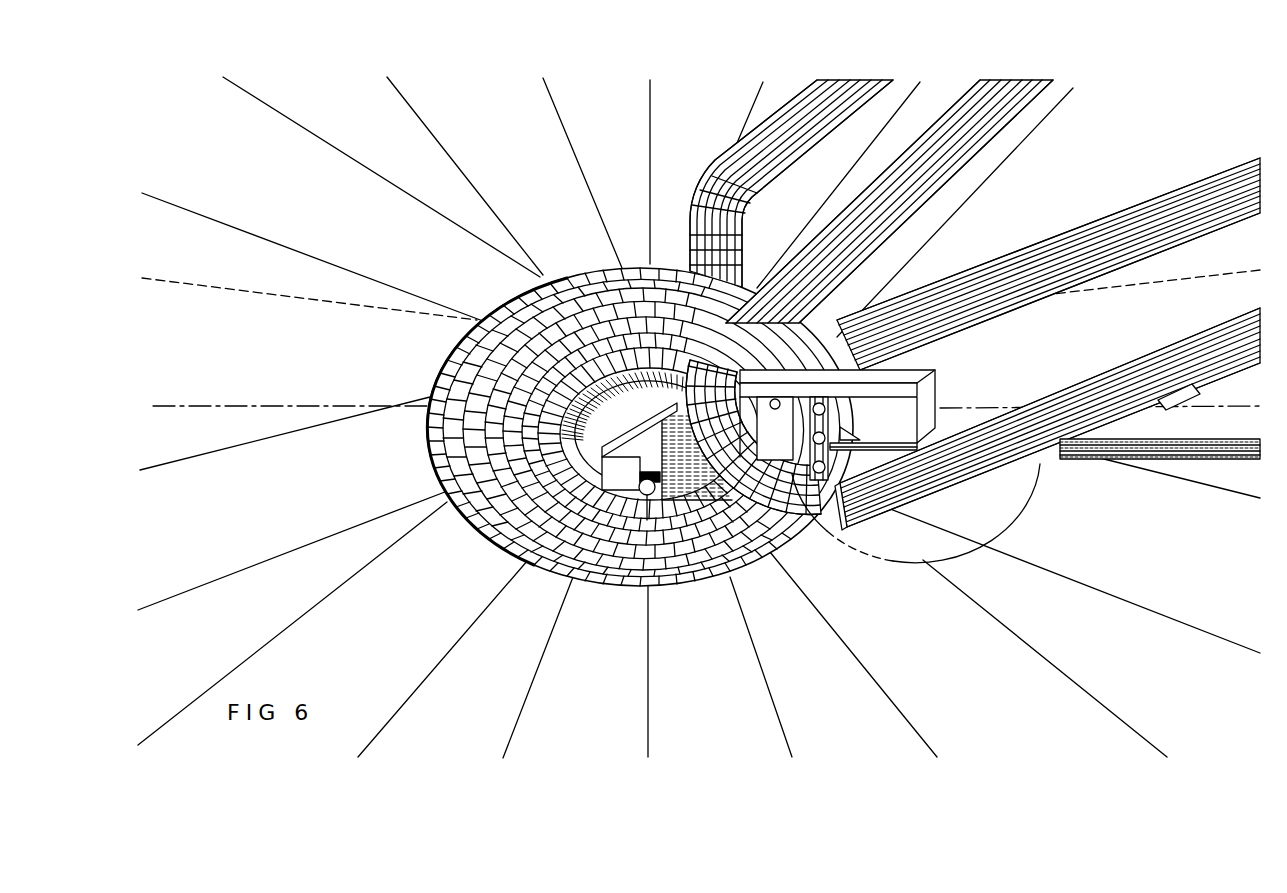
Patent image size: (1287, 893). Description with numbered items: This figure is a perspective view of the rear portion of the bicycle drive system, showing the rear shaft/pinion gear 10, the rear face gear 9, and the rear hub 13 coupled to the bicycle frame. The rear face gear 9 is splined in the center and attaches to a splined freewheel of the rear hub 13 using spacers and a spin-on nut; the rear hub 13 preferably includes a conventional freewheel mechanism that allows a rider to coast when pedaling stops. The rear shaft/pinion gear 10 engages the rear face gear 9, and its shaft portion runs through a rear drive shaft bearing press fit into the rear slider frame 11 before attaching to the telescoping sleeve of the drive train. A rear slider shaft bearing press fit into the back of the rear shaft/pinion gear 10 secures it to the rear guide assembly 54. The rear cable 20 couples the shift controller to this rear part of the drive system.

The rear face gear 9 is at (615, 587).
The rear hub 13 is at (497, 307).
The rear slider frame 11 is at (942, 398).
The rear guide assembly 54 is at (790, 427).
The rear shaft/pinion gear 10 is at (957, 483).
The rear cable 20 is at (872, 560).